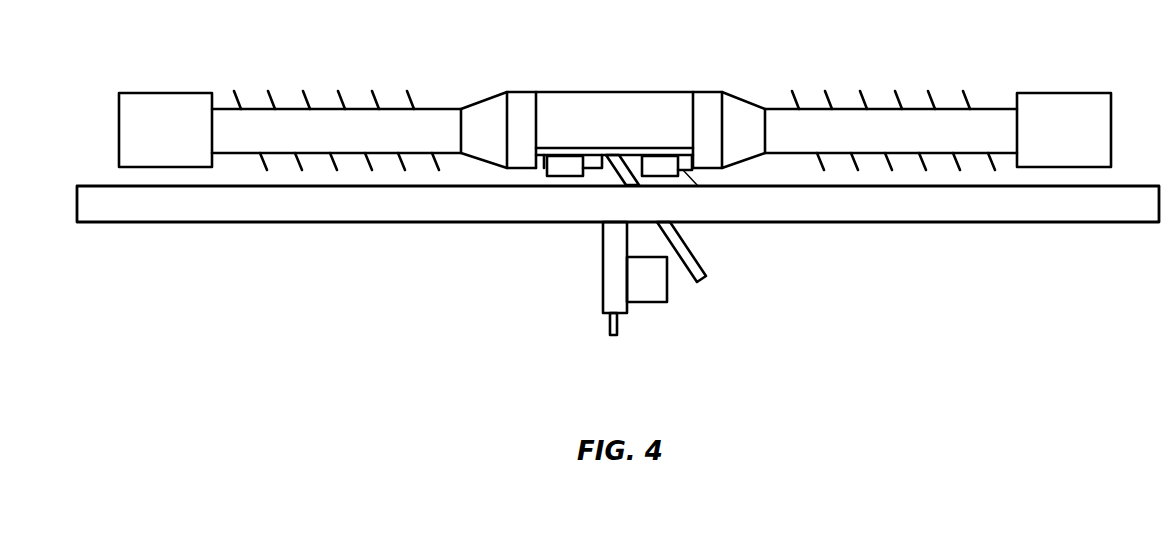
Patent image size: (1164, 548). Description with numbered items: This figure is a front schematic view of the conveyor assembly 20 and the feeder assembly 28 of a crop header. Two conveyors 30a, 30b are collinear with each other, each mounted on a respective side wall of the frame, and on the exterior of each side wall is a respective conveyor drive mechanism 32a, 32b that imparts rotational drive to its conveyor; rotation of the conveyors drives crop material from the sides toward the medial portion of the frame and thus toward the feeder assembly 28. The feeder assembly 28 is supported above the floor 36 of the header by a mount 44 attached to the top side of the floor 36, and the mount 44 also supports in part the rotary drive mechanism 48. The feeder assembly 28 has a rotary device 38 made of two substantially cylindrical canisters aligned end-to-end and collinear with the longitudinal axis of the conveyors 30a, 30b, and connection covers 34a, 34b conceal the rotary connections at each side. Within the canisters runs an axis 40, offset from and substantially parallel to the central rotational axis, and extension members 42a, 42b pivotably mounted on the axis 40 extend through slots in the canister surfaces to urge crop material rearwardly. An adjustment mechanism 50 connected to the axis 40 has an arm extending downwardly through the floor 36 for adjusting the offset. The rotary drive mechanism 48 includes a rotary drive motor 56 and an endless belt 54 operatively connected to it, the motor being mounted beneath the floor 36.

The conveyor assembly 20 is at (906, 78).
The feeder assembly 28 is at (652, 76).
The conveyor 30a is at (292, 108).
The conveyor 30b is at (847, 108).
The conveyor drive mechanism 32a is at (163, 92).
The conveyor drive mechanism 32b is at (1063, 92).
The connection cover 34a is at (484, 92).
The connection cover 34b is at (747, 92).
The floor 36 is at (970, 223).
The rotary device 38 is at (582, 92).
The axis 40 is at (544, 172).
The extension member 42a is at (565, 177).
The extension member 42b is at (678, 223).
The mount 44 is at (600, 182).
The rotary drive mechanism 48 is at (639, 348).
The adjustment mechanism 50 is at (702, 264).
The endless belt 54 is at (608, 328).
The rotary drive motor 56 is at (667, 286).